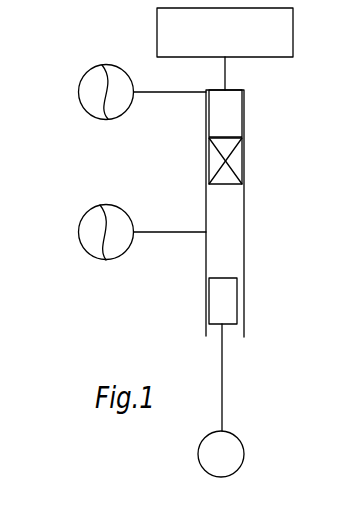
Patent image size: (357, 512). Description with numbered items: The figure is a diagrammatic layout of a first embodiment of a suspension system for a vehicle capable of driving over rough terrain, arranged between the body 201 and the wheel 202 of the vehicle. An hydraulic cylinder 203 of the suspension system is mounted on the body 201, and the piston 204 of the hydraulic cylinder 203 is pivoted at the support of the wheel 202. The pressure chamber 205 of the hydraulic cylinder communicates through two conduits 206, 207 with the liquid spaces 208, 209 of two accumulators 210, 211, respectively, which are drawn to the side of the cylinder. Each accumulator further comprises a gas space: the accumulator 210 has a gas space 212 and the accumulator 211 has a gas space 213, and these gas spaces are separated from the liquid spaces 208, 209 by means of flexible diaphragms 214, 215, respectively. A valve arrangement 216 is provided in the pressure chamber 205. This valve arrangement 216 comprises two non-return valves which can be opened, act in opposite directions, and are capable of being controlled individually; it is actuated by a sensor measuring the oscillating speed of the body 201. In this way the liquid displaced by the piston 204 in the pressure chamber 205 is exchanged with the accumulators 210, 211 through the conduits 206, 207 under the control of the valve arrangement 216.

The body 201 is at (232, 45).
The wheel 202 is at (238, 463).
The hydraulic cylinder 203 is at (244, 108).
The piston 204 is at (228, 293).
The pressure chamber 205 is at (240, 129).
The conduit 206 is at (172, 93).
The conduit 207 is at (172, 233).
The liquid space 208 is at (115, 78).
The liquid space 209 is at (117, 248).
The accumulator 210 is at (86, 62).
The accumulator 211 is at (96, 263).
The gas space 212 is at (92, 96).
The gas space 213 is at (90, 230).
The flexible diaphragm 214 is at (100, 117).
The flexible diaphragm 215 is at (92, 210).
The valve arrangement 216 is at (232, 163).